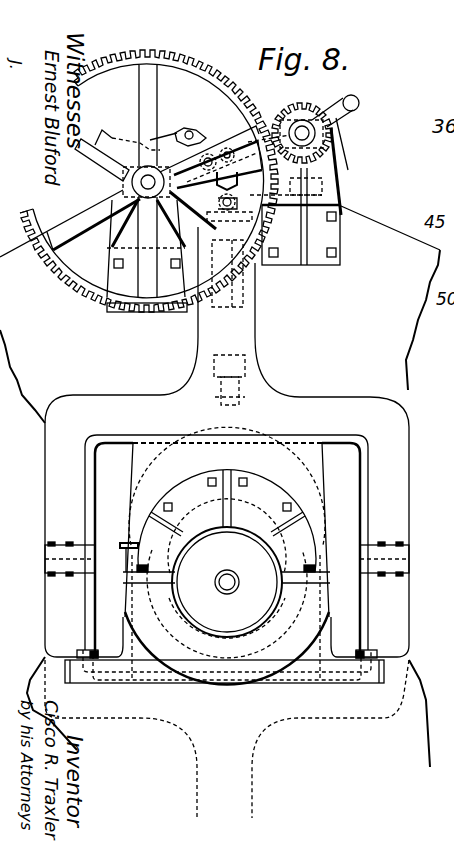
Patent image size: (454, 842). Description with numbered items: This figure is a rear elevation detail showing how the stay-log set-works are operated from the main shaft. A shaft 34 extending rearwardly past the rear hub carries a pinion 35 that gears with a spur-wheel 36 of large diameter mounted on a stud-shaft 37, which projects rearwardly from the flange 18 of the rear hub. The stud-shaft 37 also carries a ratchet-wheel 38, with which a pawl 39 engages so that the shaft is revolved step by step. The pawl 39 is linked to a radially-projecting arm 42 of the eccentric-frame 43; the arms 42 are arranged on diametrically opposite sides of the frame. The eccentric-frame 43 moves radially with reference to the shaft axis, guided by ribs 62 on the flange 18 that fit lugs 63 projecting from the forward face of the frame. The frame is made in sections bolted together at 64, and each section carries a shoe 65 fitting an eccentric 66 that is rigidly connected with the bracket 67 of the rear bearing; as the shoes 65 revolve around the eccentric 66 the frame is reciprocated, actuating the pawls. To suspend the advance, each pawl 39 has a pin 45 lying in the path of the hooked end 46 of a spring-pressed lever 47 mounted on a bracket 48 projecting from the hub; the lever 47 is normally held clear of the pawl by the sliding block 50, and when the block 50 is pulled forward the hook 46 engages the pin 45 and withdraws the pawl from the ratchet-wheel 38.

The flange 18 is at (220, 314).
The shaft 34 is at (317, 134).
The pinion 35 is at (305, 100).
The spur-wheel 36 is at (213, 80).
The stud-shaft 37 is at (123, 181).
The ratchet-wheel 38 is at (137, 130).
The pawl 39 is at (223, 137).
The radially-projecting arm 42 is at (248, 797).
The eccentric-frame 43 is at (228, 581).
The pin 45 is at (188, 131).
The hooked end 46 is at (262, 188).
The lever 47 is at (355, 149).
The bracket 48 is at (333, 231).
The sliding block 50 is at (256, 127).
The rib 62 is at (238, 397).
The lug 63 is at (245, 365).
The bolted joint 64 is at (45, 569).
The shoe 65 is at (330, 628).
The eccentric 66 is at (127, 547).
The bracket 67 is at (223, 505).